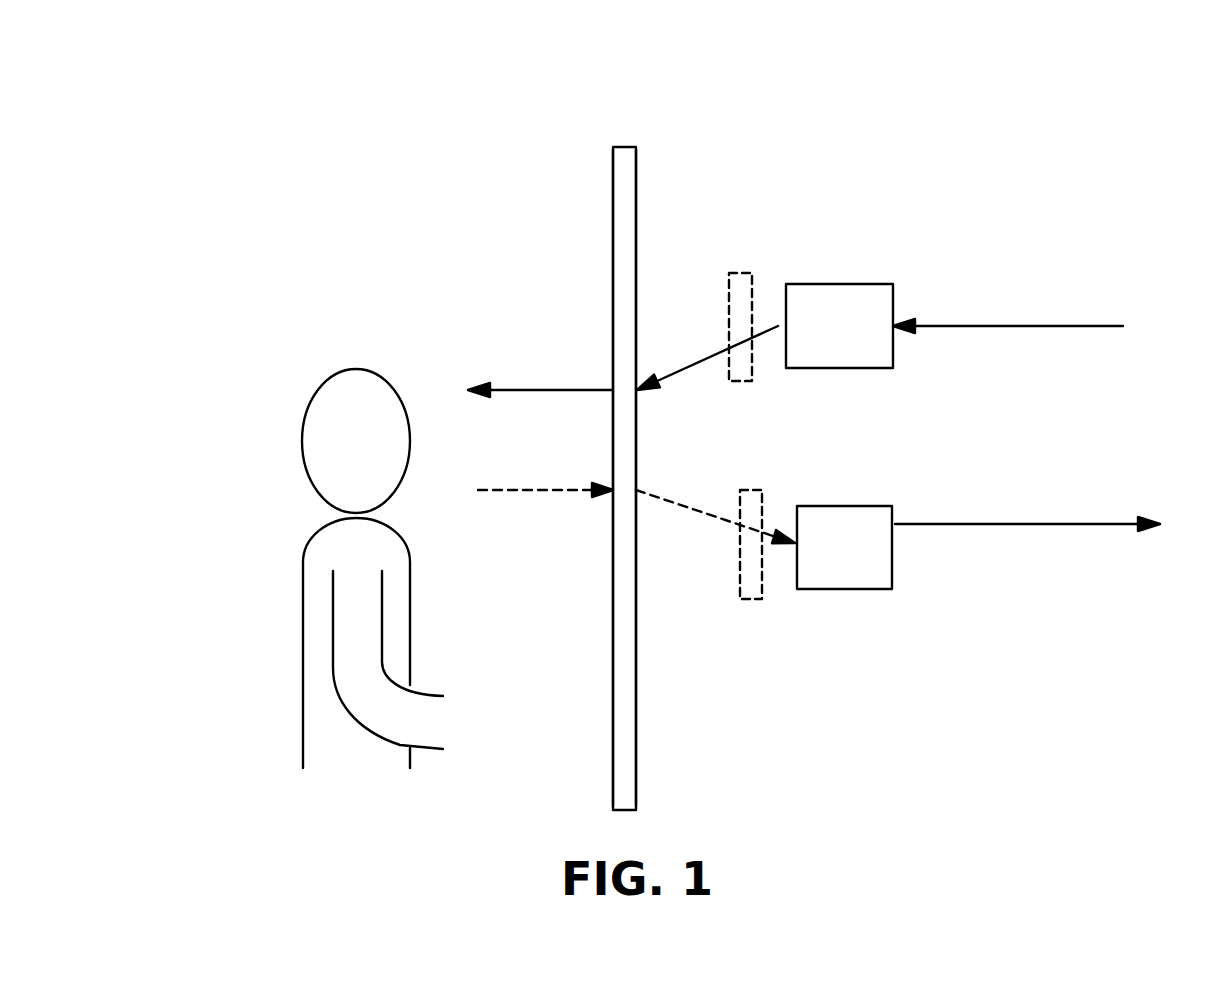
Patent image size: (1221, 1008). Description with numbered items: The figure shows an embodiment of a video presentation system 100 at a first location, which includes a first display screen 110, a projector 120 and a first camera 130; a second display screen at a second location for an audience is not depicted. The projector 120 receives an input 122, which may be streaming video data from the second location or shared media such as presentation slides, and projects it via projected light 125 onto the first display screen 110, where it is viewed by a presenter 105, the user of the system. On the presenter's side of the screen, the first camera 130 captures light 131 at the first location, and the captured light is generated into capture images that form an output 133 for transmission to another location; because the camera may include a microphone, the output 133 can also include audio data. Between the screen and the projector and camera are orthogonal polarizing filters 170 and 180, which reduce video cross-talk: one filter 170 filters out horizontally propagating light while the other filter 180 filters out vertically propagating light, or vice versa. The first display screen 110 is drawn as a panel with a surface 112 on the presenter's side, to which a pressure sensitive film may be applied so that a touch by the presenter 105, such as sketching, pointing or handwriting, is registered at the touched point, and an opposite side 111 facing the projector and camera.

The video presentation system 100 is at (137, 75).
The presenter 105 is at (377, 370).
The first display screen 110 is at (636, 147).
The second surface of panel 111 is at (636, 208).
The surface 112 is at (613, 170).
The projector 120 is at (849, 284).
The input 122 is at (1110, 304).
The projected light 125 is at (577, 388).
The first camera 130 is at (848, 592).
The light 131 is at (505, 492).
The output 133 is at (1110, 599).
The polarizing filter 170 is at (740, 273).
The polarizing filter 180 is at (747, 602).